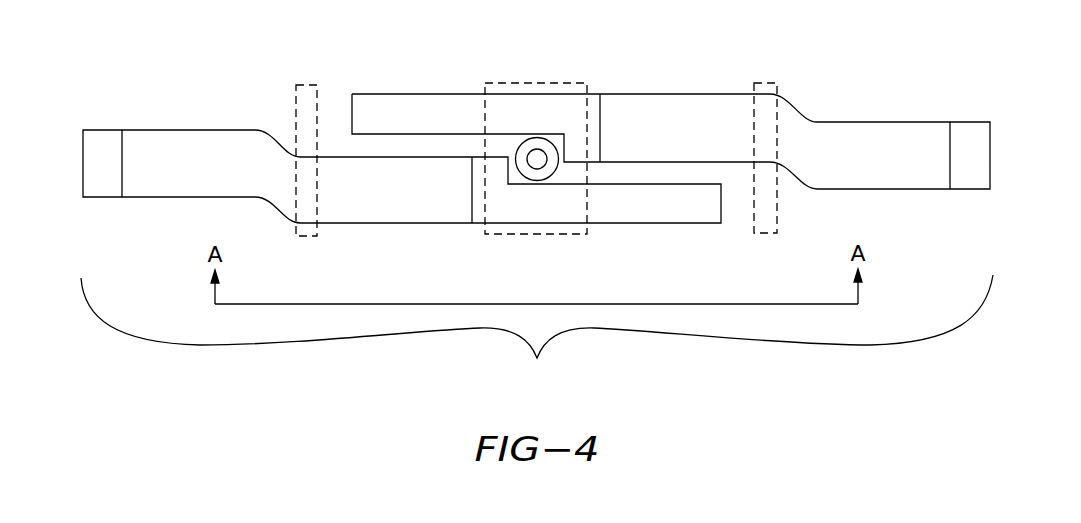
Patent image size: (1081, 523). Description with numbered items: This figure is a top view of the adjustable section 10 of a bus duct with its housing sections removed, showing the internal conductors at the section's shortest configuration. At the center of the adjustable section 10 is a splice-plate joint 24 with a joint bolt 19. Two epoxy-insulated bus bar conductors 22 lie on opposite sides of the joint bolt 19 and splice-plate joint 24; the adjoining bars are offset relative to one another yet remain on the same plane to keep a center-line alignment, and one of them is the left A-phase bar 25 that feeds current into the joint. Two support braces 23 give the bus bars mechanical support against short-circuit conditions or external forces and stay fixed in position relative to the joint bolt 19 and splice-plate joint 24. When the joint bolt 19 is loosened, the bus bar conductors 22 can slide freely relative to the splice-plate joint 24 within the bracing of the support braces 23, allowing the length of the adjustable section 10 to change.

The adjustable section 10 is at (548, 210).
The joint bolt 19 is at (537, 159).
The bus bar conductors 22 is at (100, 147).
The support braces 23 is at (297, 90).
The splice-plate joint 24 is at (508, 87).
The left A-phase bar 25 is at (698, 107).